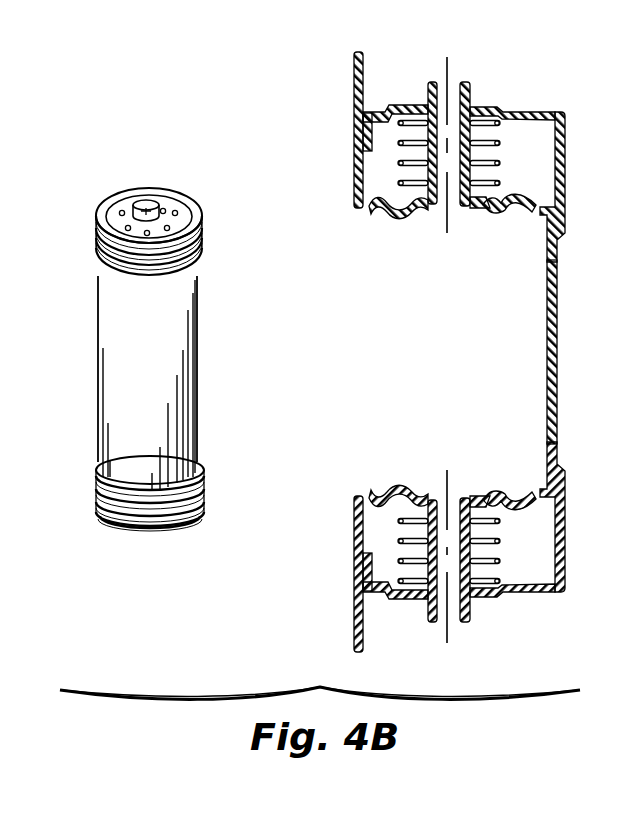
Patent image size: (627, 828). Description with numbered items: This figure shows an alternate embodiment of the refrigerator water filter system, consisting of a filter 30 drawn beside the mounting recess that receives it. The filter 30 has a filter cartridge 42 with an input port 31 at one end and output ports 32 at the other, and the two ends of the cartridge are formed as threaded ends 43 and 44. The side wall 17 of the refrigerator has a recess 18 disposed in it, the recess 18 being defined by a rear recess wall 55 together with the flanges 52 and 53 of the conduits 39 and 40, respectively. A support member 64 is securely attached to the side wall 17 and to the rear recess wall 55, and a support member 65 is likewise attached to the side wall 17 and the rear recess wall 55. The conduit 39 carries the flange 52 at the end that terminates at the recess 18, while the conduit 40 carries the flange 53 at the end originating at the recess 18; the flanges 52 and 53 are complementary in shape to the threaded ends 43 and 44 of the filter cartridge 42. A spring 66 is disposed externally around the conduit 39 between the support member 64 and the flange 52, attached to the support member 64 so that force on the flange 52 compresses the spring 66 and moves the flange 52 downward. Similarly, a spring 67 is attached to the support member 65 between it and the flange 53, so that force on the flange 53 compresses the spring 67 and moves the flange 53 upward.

The filter 30 is at (106, 113).
The threaded end 44 is at (97, 232).
The output ports 32 is at (174, 213).
The filter cartridge 42 is at (98, 324).
The threaded end 43 is at (96, 480).
The input port 31 is at (132, 528).
The recess 18 is at (376, 299).
The side wall 17 is at (354, 86).
The conduit 40 is at (470, 92).
The spring 67 is at (499, 165).
The support member 65 is at (566, 172).
The flange 53 is at (503, 203).
The rear recess wall 55 is at (559, 345).
The flange 52 is at (500, 497).
The support member 64 is at (566, 530).
The spring 66 is at (497, 563).
The conduit 39 is at (472, 620).